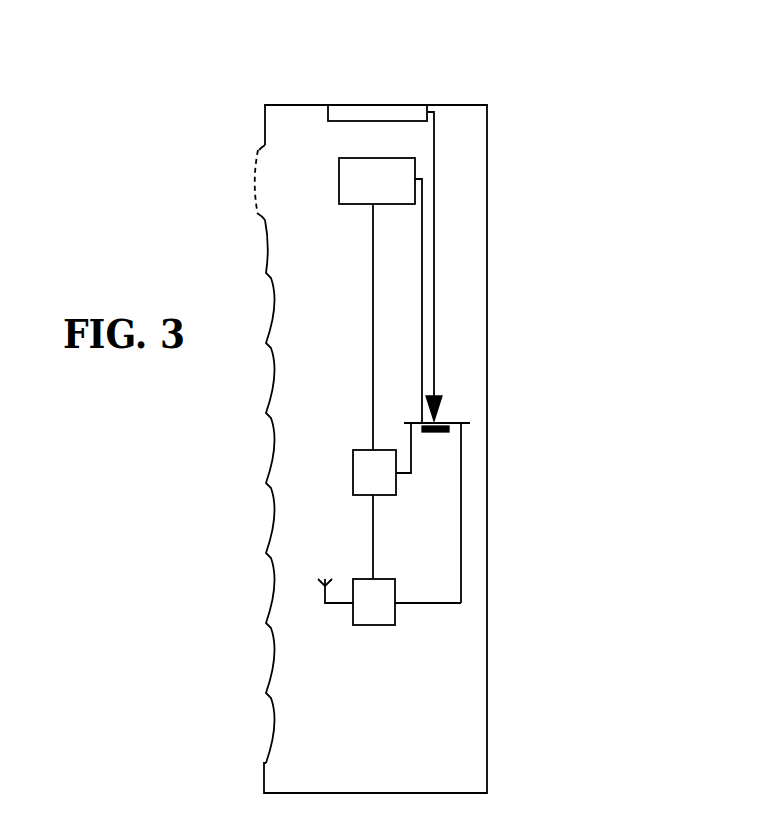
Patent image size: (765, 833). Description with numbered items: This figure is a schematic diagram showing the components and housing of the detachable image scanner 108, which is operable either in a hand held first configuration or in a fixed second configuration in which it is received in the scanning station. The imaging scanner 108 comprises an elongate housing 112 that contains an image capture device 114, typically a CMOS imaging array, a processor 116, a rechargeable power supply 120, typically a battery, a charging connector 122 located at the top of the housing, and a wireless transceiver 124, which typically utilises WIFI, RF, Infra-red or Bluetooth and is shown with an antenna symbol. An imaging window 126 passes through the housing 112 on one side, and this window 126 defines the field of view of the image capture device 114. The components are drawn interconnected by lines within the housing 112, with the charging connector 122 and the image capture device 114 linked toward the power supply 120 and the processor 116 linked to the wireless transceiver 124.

The detachable image scanner 108 is at (454, 449).
The elongate housing 112 is at (487, 475).
The image capture device 114 is at (339, 173).
The processor 116 is at (353, 463).
The rechargeable power supply 120 is at (455, 422).
The charging connector 122 is at (392, 103).
The wireless transceiver 124 is at (365, 626).
The imaging window 126 is at (253, 173).